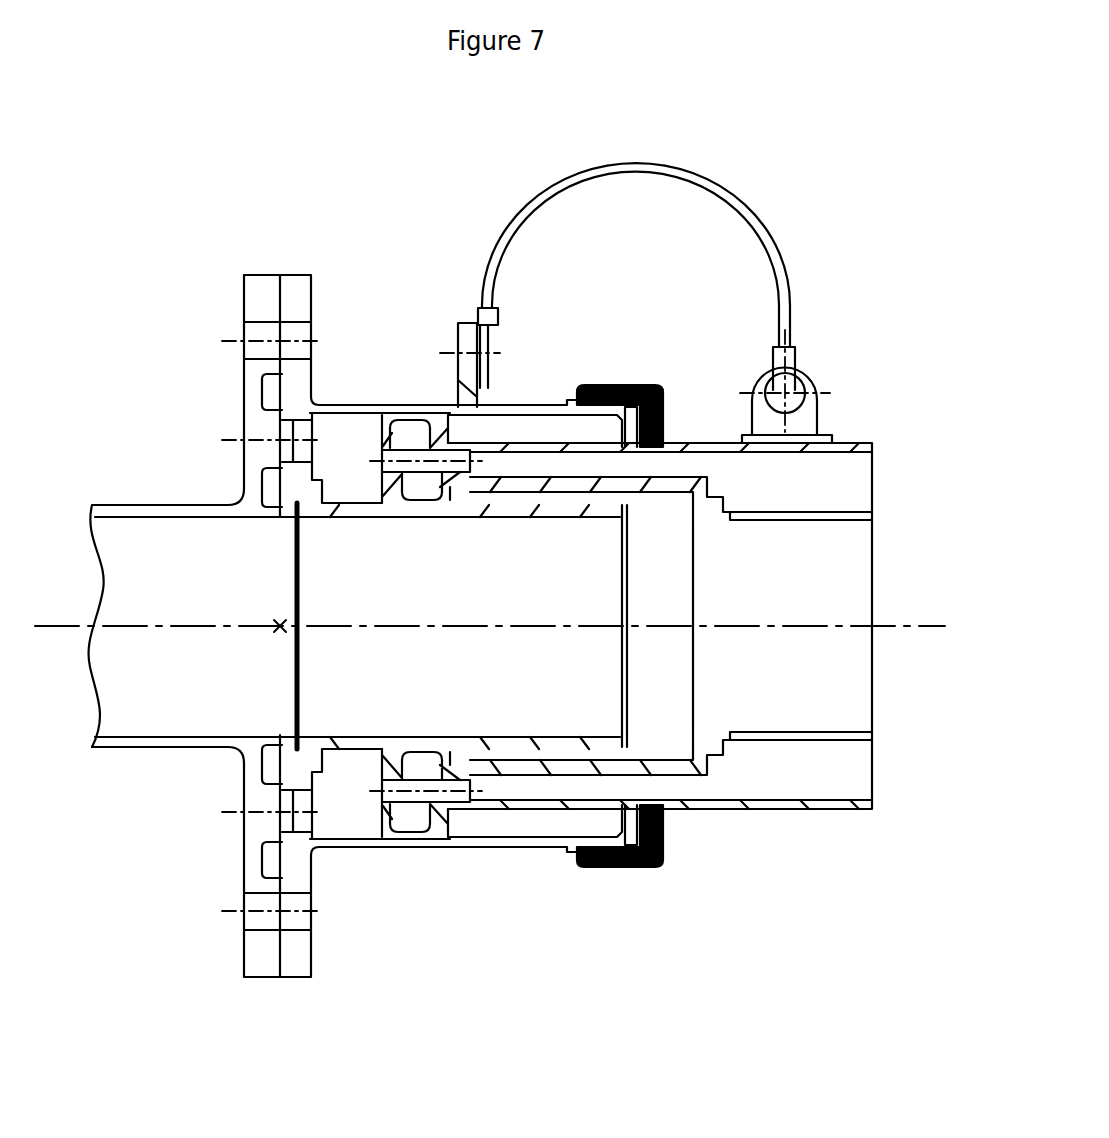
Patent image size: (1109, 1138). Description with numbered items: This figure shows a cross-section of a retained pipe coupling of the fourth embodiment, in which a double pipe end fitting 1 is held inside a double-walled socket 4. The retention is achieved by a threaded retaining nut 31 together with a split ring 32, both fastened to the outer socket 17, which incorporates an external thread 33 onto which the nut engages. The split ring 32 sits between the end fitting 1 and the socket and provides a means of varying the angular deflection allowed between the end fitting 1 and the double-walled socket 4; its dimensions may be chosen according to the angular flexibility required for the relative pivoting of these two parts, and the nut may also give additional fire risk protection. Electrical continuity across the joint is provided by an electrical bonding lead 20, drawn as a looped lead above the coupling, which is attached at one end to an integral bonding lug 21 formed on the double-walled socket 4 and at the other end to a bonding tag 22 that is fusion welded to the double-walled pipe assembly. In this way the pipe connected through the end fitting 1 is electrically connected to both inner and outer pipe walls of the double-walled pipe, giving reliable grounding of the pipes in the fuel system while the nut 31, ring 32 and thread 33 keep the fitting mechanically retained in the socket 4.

The double pipe end fitting 1 is at (410, 432).
The double-walled socket 4 is at (408, 848).
The outer socket 17 is at (504, 848).
The electrical bonding lead 20 is at (686, 167).
The integral bonding lug 21 is at (459, 320).
The bonding tag 22 is at (809, 372).
The threaded retaining nut 31 is at (664, 870).
The split ring 32 is at (643, 823).
The external thread 33 is at (565, 850).